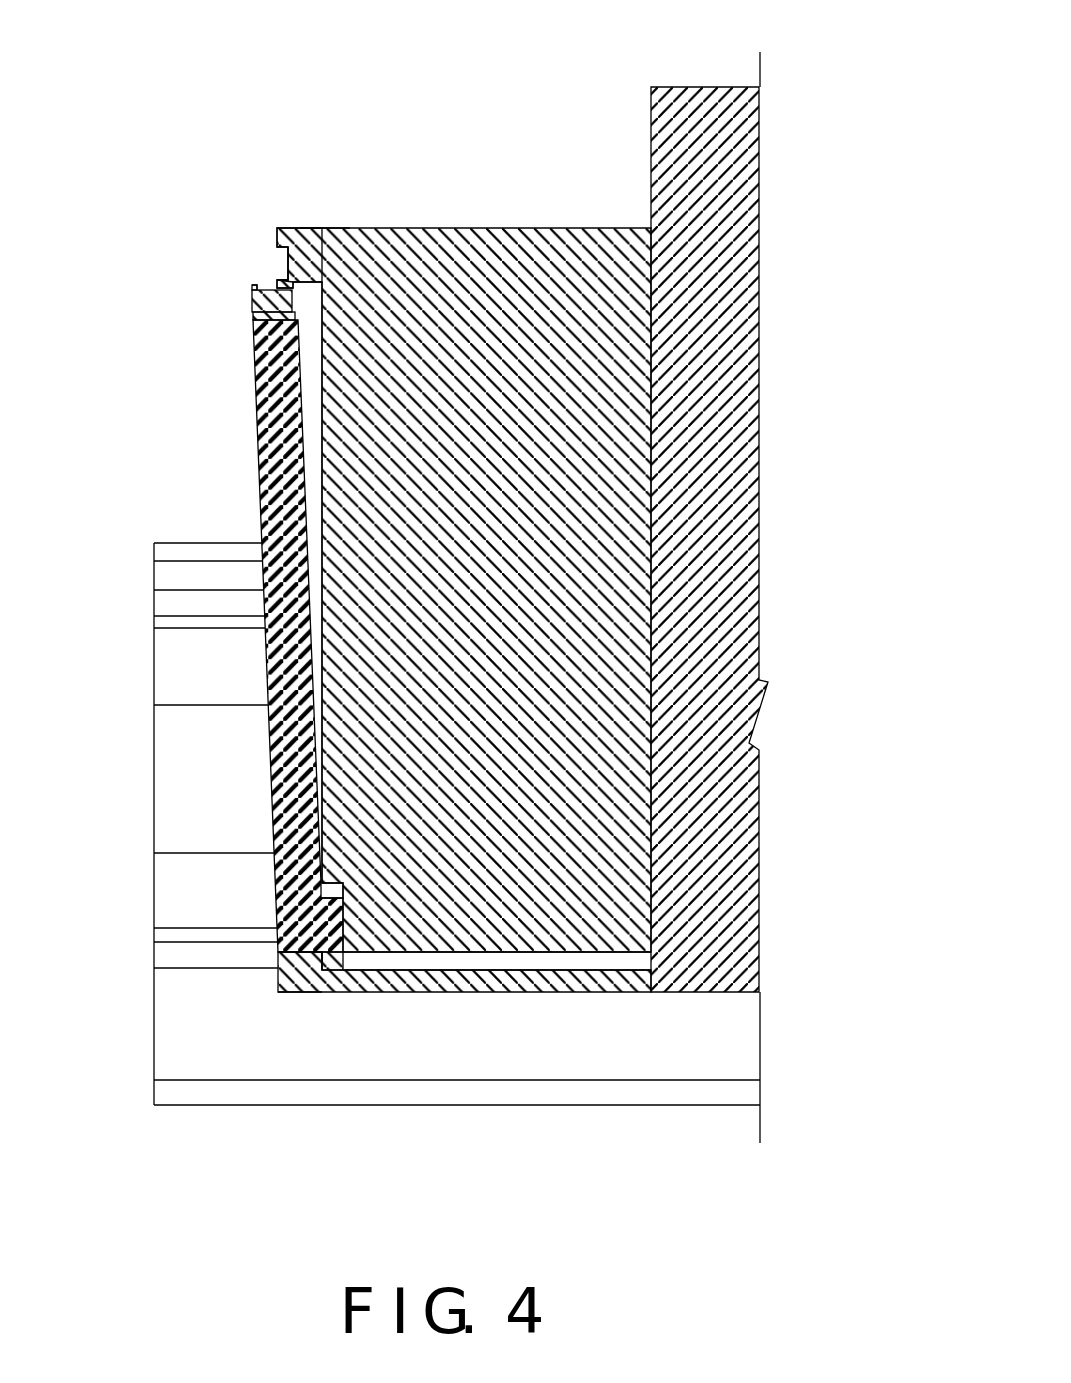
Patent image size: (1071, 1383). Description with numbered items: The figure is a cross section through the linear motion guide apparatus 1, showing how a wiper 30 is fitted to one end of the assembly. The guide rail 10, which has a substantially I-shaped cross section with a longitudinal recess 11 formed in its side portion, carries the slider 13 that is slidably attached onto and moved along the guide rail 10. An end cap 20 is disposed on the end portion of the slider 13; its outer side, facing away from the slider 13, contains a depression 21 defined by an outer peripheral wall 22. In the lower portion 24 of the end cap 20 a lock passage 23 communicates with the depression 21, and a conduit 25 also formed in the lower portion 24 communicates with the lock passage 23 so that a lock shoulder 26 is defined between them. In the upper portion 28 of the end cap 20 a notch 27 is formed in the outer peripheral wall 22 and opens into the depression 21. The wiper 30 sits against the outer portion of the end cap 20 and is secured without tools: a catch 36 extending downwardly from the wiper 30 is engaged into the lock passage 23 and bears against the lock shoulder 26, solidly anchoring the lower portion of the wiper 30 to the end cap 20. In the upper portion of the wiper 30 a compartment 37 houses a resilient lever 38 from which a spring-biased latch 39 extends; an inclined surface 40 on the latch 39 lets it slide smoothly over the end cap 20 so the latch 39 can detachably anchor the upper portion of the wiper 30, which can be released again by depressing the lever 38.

The linear motion guide apparatus 1 is at (309, 83).
The guide rail 10 is at (190, 688).
The longitudinal recess 11 is at (175, 790).
The slider 13 is at (737, 186).
The end cap 20 is at (460, 252).
The depression 21 is at (318, 385).
The outer peripheral wall 22 is at (283, 232).
The lock passage 23 is at (322, 886).
The lower portion 24 is at (495, 992).
The conduit 25 is at (400, 958).
The lock shoulder 26 is at (297, 990).
The notch 27 is at (282, 262).
The upper portion 28 is at (327, 218).
The wiper 30 is at (258, 383).
The catch 36 is at (333, 990).
The compartment 37 is at (262, 322).
The lever 38 is at (253, 296).
The latch 39 is at (270, 276).
The inclined surface 40 is at (285, 282).